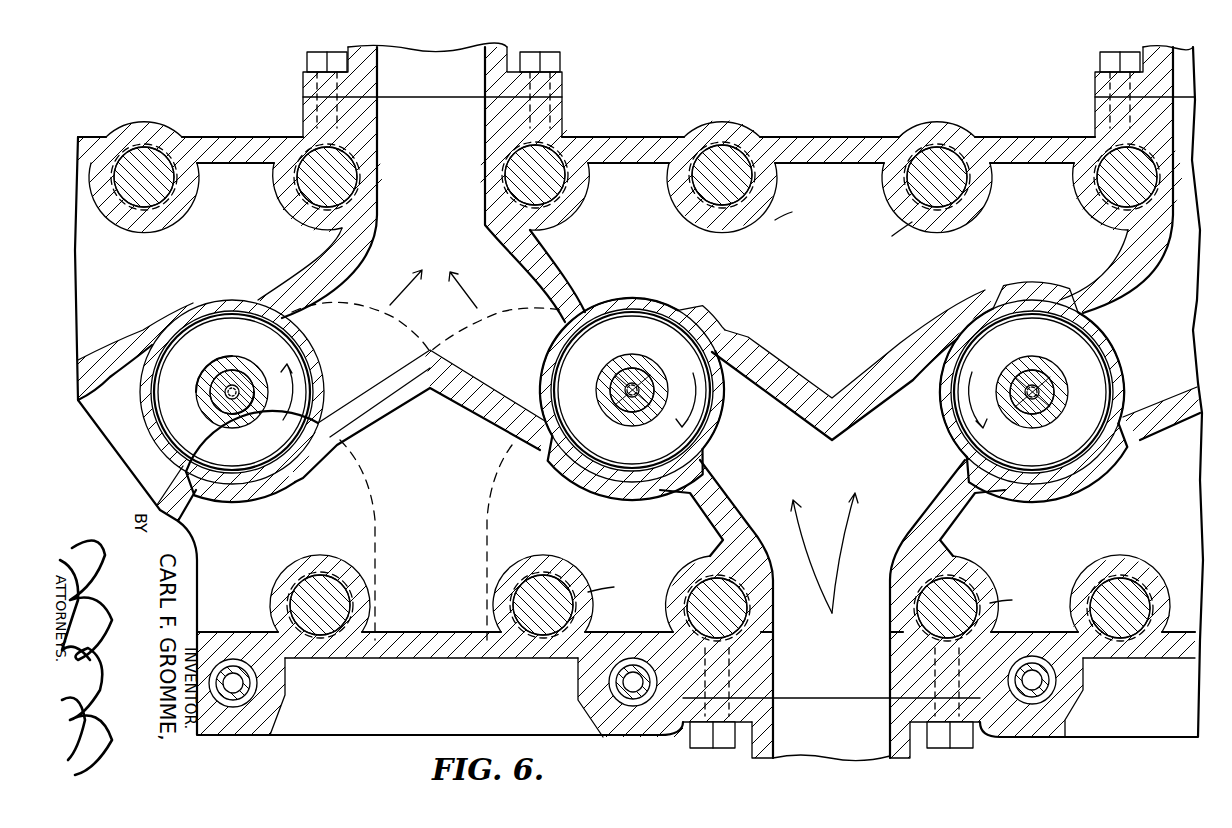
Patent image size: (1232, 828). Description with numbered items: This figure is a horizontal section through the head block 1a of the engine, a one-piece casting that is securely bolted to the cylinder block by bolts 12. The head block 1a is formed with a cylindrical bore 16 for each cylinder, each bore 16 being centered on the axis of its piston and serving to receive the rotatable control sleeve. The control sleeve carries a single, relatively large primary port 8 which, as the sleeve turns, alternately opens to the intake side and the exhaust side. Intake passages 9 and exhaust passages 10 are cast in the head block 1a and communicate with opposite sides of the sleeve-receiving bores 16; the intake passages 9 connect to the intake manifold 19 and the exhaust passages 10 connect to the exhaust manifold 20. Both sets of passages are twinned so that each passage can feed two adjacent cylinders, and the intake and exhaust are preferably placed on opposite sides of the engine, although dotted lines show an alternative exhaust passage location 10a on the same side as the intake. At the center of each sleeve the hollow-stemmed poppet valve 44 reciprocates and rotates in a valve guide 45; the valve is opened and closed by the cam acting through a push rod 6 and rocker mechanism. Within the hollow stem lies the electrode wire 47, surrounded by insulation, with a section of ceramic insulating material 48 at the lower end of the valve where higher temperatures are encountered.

The head block 1a is at (1085, 672).
The push rod 6 is at (252, 690).
The primary port 8 is at (325, 386).
The intake passages 9 is at (868, 552).
The exhaust passages 10 is at (450, 186).
The alternative exhaust passages 10a is at (490, 503).
The bolts 12 is at (811, 405).
The cylindrical bore 16 is at (303, 475).
The intake manifold 19 is at (897, 753).
The exhaust manifold 20 is at (570, 80).
The poppet valve 44 is at (243, 373).
The valve guide 45 is at (218, 370).
The electrode wire 47 is at (244, 408).
The ceramic insulating material 48 is at (228, 398).